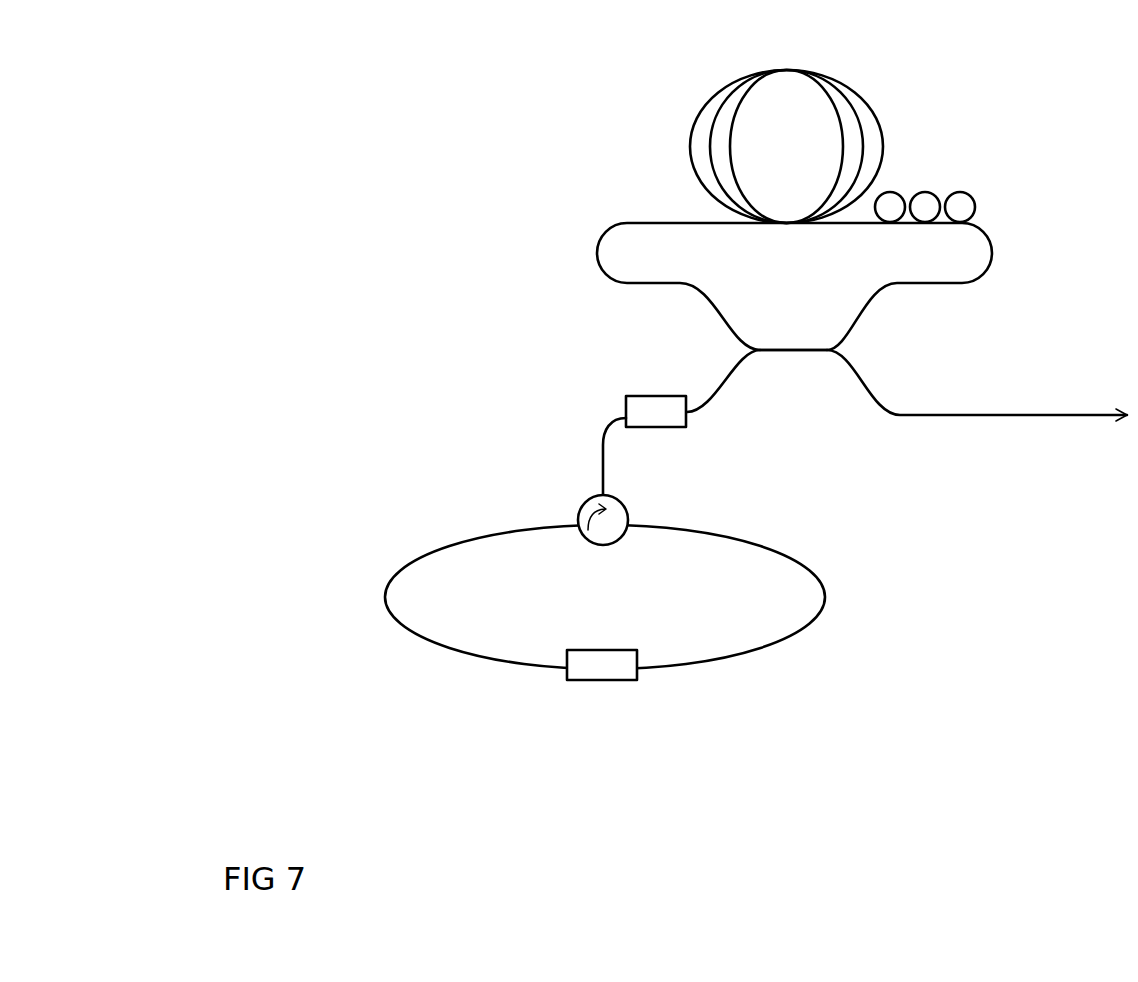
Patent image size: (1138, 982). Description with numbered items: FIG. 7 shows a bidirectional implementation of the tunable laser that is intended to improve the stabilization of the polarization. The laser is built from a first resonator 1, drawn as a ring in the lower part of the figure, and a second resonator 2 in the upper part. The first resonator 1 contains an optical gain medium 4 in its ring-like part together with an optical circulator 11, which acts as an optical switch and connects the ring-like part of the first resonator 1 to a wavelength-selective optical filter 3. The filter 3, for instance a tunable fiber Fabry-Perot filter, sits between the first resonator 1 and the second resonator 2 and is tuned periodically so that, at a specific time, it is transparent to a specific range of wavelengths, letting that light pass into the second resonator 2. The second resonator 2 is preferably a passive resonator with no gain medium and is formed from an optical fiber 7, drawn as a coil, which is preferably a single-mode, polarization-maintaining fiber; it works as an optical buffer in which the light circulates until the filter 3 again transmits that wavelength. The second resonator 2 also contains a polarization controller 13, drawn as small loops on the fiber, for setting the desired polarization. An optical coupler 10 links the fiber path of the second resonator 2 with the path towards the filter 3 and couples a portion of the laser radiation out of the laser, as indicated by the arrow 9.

The first resonator 1 is at (410, 465).
The second resonator 2 is at (417, 120).
The wavelength-selective optical filter 3 is at (658, 408).
The optical gain medium 4 is at (607, 670).
The optical fiber 7 is at (847, 80).
The arrow 9 is at (1037, 407).
The optical coupler 10 is at (795, 355).
The optical circulator 11 is at (613, 512).
The polarization controller 13 is at (937, 182).